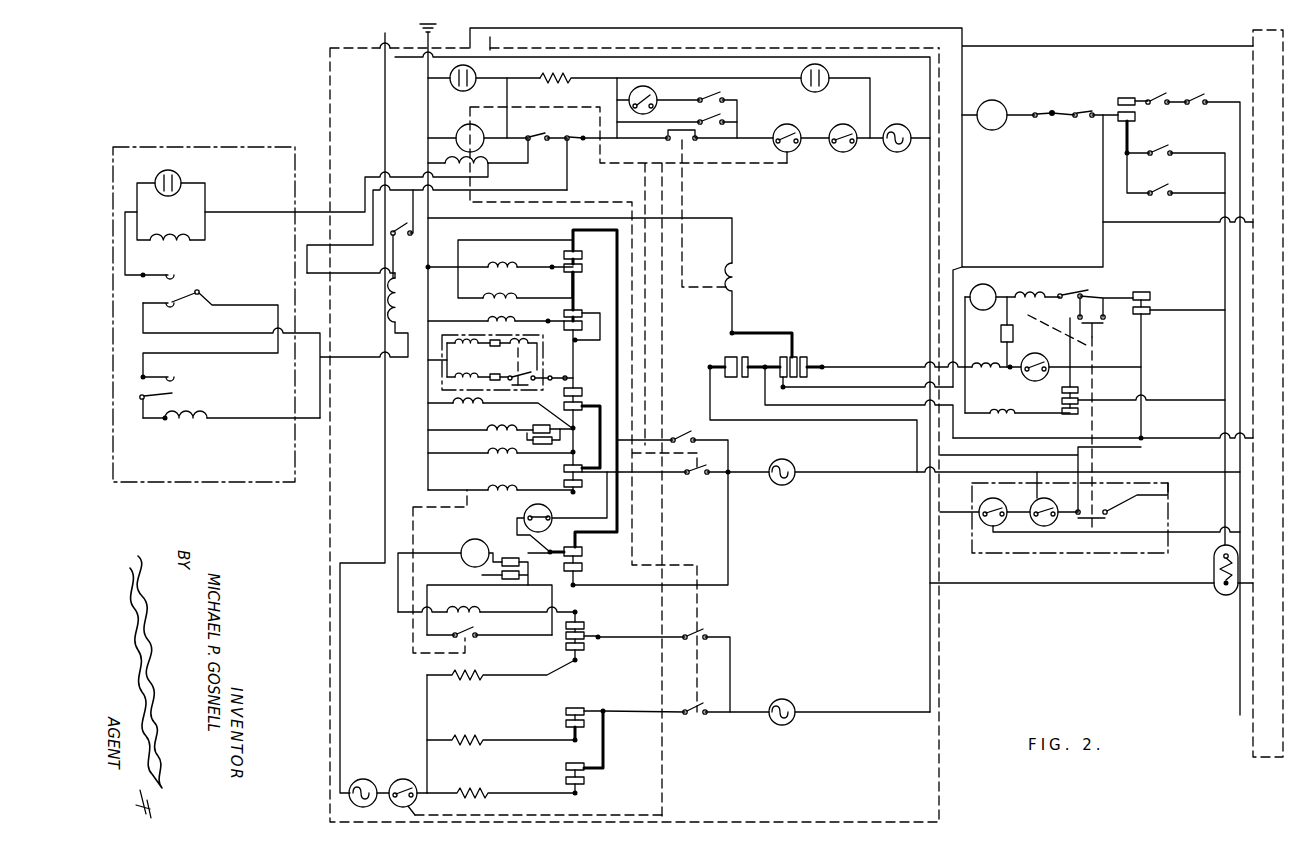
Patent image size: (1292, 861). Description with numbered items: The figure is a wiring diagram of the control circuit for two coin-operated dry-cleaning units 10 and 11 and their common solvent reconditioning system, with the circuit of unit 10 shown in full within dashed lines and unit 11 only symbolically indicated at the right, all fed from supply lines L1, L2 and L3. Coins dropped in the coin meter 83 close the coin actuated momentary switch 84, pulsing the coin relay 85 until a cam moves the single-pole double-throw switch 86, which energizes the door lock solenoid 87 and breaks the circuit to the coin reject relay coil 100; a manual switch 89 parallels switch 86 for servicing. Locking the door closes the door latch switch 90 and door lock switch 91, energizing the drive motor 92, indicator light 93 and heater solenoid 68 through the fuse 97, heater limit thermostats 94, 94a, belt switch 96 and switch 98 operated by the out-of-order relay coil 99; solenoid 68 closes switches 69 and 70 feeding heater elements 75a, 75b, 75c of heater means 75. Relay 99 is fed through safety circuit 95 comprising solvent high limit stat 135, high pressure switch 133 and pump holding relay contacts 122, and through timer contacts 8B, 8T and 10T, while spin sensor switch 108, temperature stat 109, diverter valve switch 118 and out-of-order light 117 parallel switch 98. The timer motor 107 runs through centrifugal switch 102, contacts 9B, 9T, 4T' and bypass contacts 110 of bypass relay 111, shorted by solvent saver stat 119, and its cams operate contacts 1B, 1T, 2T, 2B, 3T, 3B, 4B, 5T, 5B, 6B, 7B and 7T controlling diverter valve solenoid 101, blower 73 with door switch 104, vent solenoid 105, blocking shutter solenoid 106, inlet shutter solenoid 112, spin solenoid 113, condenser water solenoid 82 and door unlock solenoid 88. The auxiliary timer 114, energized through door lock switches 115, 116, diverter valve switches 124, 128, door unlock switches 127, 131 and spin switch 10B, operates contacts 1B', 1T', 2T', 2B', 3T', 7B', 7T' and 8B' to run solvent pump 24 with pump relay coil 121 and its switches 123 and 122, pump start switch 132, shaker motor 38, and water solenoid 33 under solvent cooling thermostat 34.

The dry-cleaning unit 10 is at (325, 677).
The dry-cleaning unit 11 is at (1250, 631).
The solvent pump 24 is at (980, 312).
The water solenoid 33 is at (984, 370).
The solvent cooling thermostat 34 is at (1028, 377).
The shaker motor 38 is at (1003, 416).
The heater solenoid 68 is at (486, 163).
The heater switch 69 is at (705, 634).
The heater switch 70 is at (705, 704).
The blower 73 is at (440, 385).
The heater means 75 is at (424, 718).
The heater element 75a is at (465, 787).
The heater element 75b is at (462, 736).
The heater element 75c is at (470, 672).
The condenser water solenoid 82 is at (506, 295).
The coin meter 83 is at (232, 147).
The coin actuated momentary switch 84 is at (141, 395).
The coin relay 85 is at (186, 421).
The single-pole double-throw switch 86 is at (190, 290).
The door lock solenoid 87 is at (398, 311).
The door unlock solenoid 88 is at (492, 494).
The manually operable normally open switch 89 is at (408, 222).
The door latch switch 90 is at (578, 135).
The door lock switch 91 is at (537, 133).
The drive motor 92 is at (460, 127).
The indicator light 93 is at (472, 87).
The heater higher-temperature limit thermostat 94 is at (790, 152).
The heater higher-temperature limit thermostat 94a is at (406, 779).
The circuit switch means 95 is at (1040, 556).
The drive motor belt switch 96 is at (843, 152).
The fuse 97 is at (896, 152).
The switch 98 is at (696, 140).
The out-of-order relay coil 99 is at (745, 280).
The coin reject relay coil 100 is at (166, 238).
The solenoid 101 is at (486, 428).
The centrifugal switch 102 is at (700, 478).
The door switch 104 is at (677, 436).
The vent solenoid 105 is at (513, 320).
The solenoid 106 is at (506, 262).
The timer motor 107 is at (468, 544).
The spin sensor switch 108 is at (730, 112).
The temperature sensor stat 109 is at (658, 93).
The normally closed contacts 110 is at (474, 634).
The bypass relay 111 is at (457, 405).
The solenoid 112 is at (497, 456).
The spin solenoid 113 is at (475, 608).
The auxiliary timer 114 is at (1002, 104).
The door lock switch 115 is at (1160, 150).
The door lock switch 116 is at (1160, 190).
The out-of-order light 117 is at (808, 91).
The diverter valve actuated switch 118 is at (730, 92).
The solvent saver stat 119 is at (557, 508).
The pump relay coil 121 is at (1027, 292).
The pump motor holding relay contacts 122 is at (1097, 522).
The pump relay switch 123 is at (1095, 330).
The diverter valve actuated switch 124 is at (1046, 112).
The door unlock switch 127 is at (1160, 96).
The diverter valve actuated switch 128 is at (1084, 110).
The door unlock switch 131 is at (1198, 95).
The pump start switch 132 is at (1090, 290).
The high pressure switch 133 is at (1050, 526).
The solvent high limit stat 135 is at (999, 526).
The timer contact 1B is at (578, 465).
The timer contact 1T is at (561, 482).
The auxiliary timer contact 1B' is at (1163, 292).
The auxiliary timer contact 1T' is at (1179, 372).
The timer contact 2T is at (592, 616).
The timer contact 2B is at (591, 649).
The auxiliary timer contact 2T' is at (1138, 83).
The auxiliary timer contact 2B' is at (1144, 134).
The timer contact 3T is at (583, 315).
The timer contact 3B is at (568, 334).
The auxiliary timer contact 3T' is at (561, 430).
The timer contact 4B is at (565, 724).
The auxiliary timer contact 4T' is at (517, 561).
The timer contact 5T is at (580, 392).
The timer contact 5B is at (576, 428).
The timer contact 6B is at (584, 781).
The timer contact 7B is at (587, 253).
The timer contact 7T is at (587, 272).
The auxiliary timer contact 7B' is at (1097, 358).
The auxiliary timer contact 7T' is at (1137, 418).
The timer contact 8B is at (746, 354).
The timer contact 8T is at (745, 378).
The auxiliary timer contact 8B' is at (1045, 333).
The timer contact 9B is at (584, 549).
The timer contact 9T is at (584, 568).
The auxiliary control spin switch 10B is at (781, 357).
The timer contact 10T is at (809, 358).
The voltage source line L1 is at (362, 410).
The voltage source line L2 is at (714, 40).
The voltage source line L3 is at (437, 257).